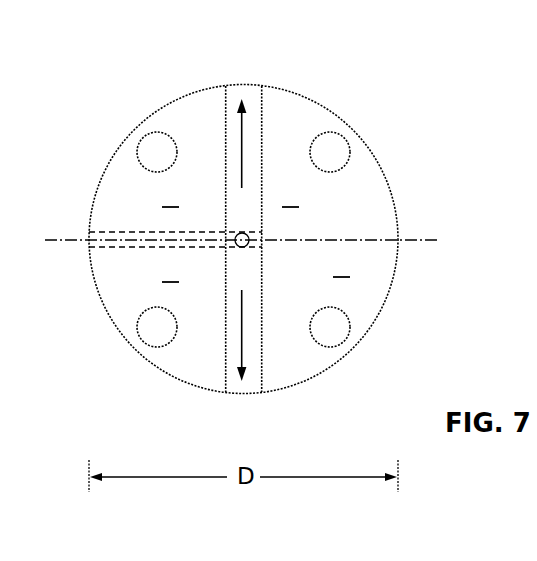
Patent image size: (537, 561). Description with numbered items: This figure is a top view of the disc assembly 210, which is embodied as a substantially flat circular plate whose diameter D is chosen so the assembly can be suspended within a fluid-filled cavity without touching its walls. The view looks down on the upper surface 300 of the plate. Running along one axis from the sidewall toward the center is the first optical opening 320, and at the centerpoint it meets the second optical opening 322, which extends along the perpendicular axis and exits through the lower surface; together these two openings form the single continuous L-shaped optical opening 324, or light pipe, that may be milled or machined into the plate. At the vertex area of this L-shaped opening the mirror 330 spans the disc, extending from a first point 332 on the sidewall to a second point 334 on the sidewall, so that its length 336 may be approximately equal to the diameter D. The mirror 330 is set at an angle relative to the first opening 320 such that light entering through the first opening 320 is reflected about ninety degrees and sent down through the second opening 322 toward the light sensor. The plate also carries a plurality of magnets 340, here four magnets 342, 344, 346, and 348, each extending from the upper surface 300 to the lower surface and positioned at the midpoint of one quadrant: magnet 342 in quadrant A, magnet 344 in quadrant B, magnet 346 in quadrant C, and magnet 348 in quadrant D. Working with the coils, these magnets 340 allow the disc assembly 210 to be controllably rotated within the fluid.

The disc assembly 210 is at (382, 68).
The upper surface 300 is at (320, 294).
The first optical opening 320 is at (80, 231).
The second optical opening 322 is at (249, 240).
The L-shaped optical opening 324 is at (155, 235).
The mirror 330 is at (243, 147).
The first point 332 is at (242, 85).
The second point 334 is at (241, 393).
The length of the mirror 336 is at (243, 328).
The magnets 340 is at (367, 177).
The magnet 342 is at (335, 142).
The magnet 344 is at (150, 148).
The magnet 346 is at (157, 338).
The magnet 348 is at (332, 335).